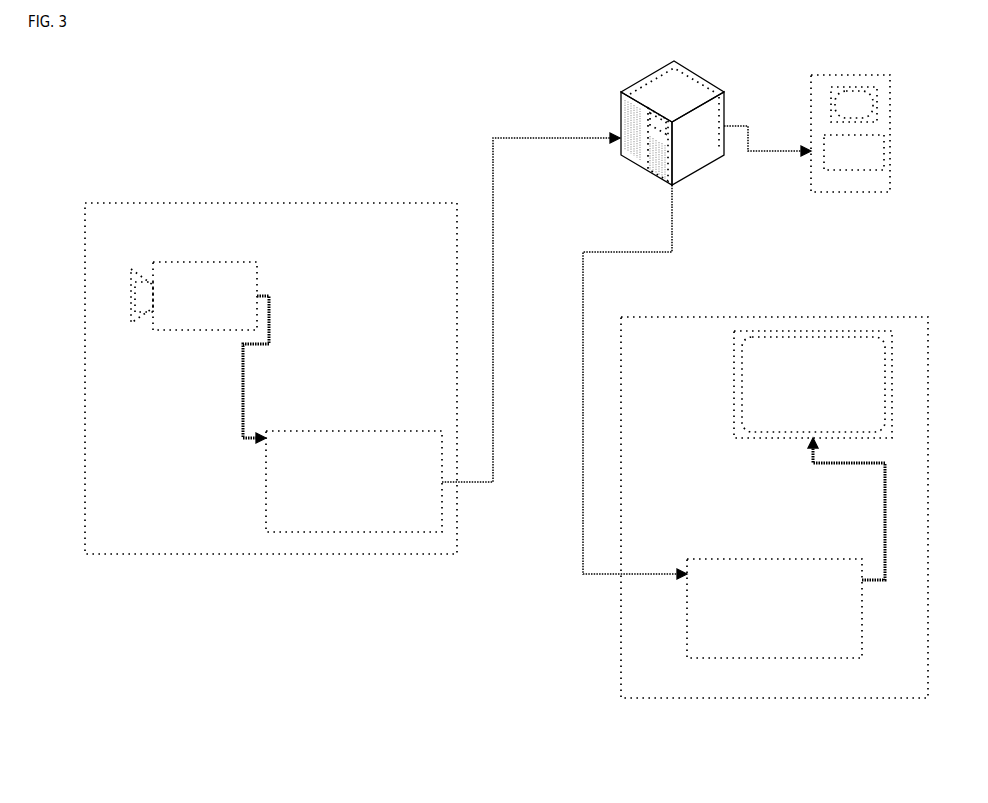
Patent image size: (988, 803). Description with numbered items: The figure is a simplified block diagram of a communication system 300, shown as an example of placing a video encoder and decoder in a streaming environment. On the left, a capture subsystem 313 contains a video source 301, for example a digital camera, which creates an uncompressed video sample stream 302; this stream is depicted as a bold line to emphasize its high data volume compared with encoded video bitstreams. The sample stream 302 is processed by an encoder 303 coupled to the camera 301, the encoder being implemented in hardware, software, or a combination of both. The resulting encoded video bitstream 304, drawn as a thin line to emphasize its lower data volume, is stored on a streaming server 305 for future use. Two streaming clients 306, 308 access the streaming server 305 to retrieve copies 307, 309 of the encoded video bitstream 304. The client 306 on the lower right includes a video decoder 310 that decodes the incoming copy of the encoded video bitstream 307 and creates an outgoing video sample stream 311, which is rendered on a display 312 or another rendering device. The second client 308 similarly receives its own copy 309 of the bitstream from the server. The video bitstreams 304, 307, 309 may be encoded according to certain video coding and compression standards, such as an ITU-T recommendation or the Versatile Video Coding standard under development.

The system 300 is at (517, 355).
The video source 301 is at (207, 262).
The video sample stream 302 is at (242, 396).
The encoder 303 is at (363, 431).
The encoded video bitstream 304 is at (493, 166).
The streaming server 305 is at (624, 112).
The streaming client 306 is at (621, 683).
The copy of the encoded video bitstream 307 is at (583, 436).
The streaming client 308 is at (892, 110).
The copy of the encoded video bitstream 309 is at (756, 154).
The video decoder 310 is at (688, 635).
The outgoing video sample stream 311 is at (885, 508).
The display 312 is at (734, 387).
The capture subsystem 313 is at (200, 556).